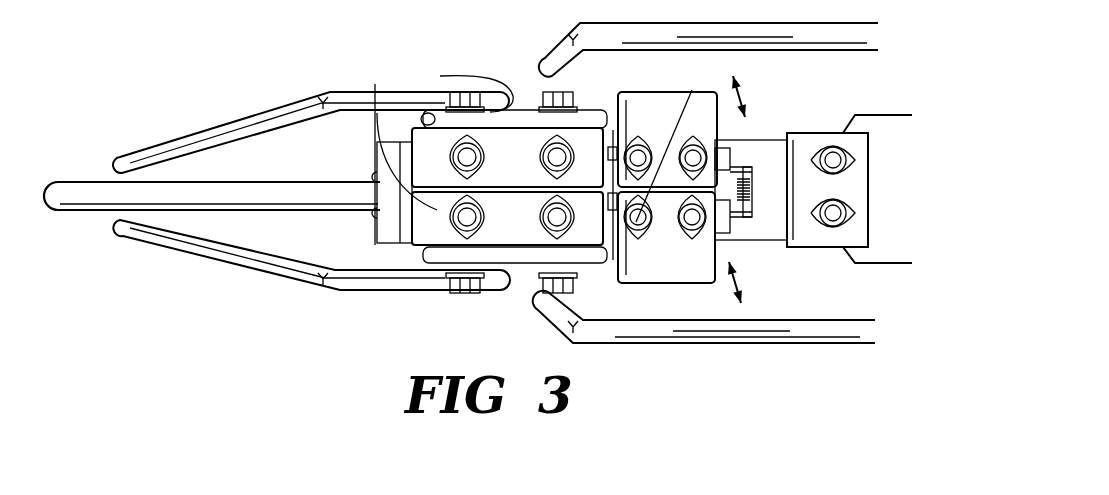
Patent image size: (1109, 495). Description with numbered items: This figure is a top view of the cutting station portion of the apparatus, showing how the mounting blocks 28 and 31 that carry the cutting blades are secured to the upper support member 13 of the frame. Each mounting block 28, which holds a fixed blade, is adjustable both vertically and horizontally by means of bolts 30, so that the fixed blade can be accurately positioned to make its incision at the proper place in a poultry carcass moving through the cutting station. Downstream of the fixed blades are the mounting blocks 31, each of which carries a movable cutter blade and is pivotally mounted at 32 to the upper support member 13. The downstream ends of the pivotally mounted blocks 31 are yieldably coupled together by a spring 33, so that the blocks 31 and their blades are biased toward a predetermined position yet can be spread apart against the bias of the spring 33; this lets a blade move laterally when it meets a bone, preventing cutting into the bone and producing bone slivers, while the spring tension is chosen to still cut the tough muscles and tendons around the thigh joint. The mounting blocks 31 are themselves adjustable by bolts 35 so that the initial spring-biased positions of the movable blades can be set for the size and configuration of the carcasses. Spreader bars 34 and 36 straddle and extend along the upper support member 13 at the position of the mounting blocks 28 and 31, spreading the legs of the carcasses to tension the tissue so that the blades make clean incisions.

The upper support member 13 is at (838, 104).
The mounting block 28 is at (400, 154).
The bolt 30 is at (462, 152).
The mounting block 31 is at (668, 96).
The pivot 32 is at (613, 152).
The spring 33 is at (753, 205).
The spreader bar 34 is at (197, 132).
The bolt 35 is at (676, 144).
The spreader bar 36 is at (788, 54).